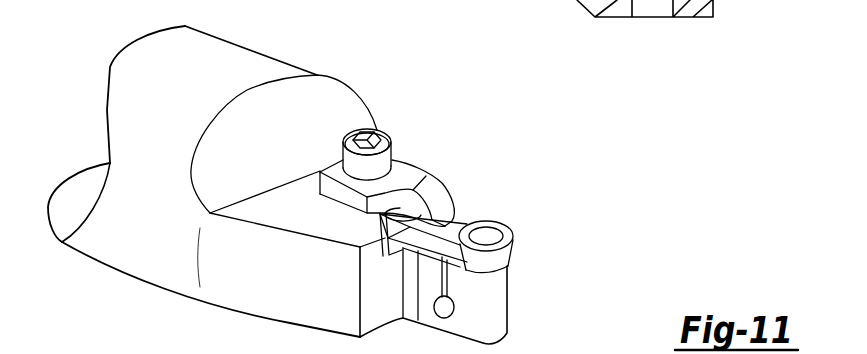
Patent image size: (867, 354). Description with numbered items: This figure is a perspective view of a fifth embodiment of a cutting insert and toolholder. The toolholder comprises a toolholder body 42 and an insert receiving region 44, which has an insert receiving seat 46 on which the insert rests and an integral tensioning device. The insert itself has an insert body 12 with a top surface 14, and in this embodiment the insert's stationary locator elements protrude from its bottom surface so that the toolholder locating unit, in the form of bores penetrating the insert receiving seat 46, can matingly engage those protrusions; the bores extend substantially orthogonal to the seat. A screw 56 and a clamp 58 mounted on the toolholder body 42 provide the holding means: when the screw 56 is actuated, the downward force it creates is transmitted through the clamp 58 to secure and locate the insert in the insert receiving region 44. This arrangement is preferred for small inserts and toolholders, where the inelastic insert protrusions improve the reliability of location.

The insert body 12 is at (248, 156).
The top surface 14 is at (462, 220).
The toolholder body 42 is at (240, 44).
The insert receiving region 44 is at (427, 316).
The insert receiving seat 46 is at (460, 268).
The screw 56 is at (390, 134).
The clamp 58 is at (418, 168).